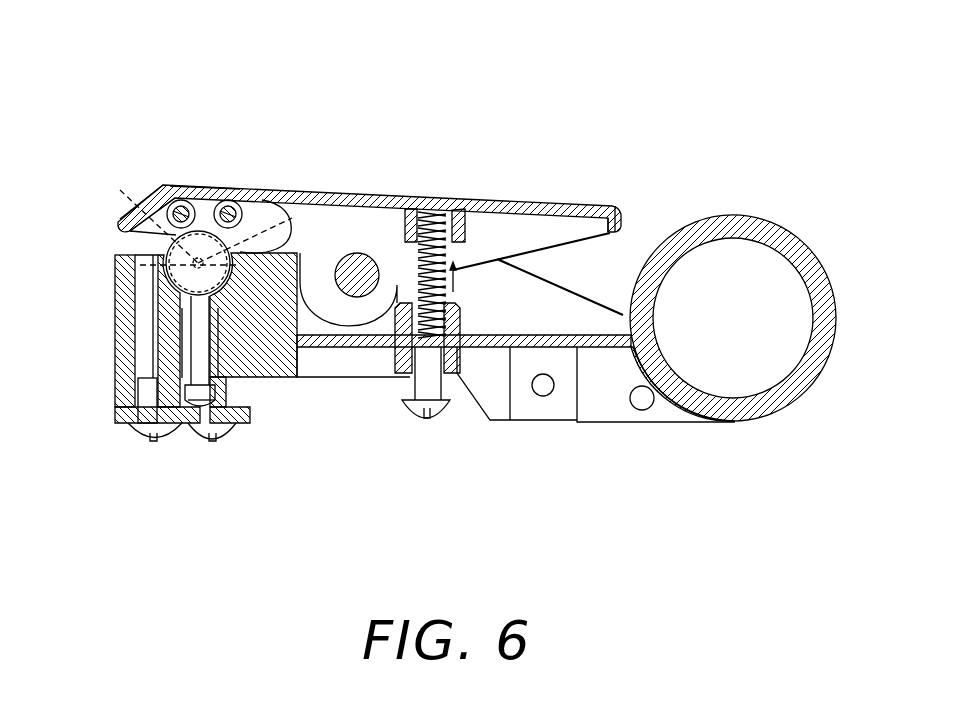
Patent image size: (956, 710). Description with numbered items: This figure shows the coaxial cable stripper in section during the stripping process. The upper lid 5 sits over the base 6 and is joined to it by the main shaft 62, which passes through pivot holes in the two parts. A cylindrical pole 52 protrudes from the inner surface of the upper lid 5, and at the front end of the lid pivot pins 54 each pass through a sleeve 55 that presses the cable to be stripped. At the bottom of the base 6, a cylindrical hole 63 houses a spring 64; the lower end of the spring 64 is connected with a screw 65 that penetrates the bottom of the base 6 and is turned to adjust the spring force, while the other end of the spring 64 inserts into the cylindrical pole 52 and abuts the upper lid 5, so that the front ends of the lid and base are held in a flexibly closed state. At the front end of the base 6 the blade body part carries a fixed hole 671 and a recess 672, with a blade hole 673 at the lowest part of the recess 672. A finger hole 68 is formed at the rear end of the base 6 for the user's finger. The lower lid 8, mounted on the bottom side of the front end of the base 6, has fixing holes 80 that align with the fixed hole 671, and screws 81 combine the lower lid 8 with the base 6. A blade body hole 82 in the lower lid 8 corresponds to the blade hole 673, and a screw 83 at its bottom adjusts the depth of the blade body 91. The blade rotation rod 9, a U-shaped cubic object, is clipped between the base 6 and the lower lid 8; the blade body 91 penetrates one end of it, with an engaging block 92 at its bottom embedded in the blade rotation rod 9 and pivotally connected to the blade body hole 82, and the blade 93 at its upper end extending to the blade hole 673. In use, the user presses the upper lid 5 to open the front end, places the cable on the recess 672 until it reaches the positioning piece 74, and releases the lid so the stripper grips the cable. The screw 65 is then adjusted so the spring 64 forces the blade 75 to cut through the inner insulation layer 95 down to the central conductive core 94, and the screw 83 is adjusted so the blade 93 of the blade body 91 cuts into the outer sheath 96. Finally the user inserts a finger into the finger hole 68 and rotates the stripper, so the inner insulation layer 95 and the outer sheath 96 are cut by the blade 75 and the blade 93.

The upper lid 5 is at (345, 146).
The base 6 is at (520, 448).
The lower lid 8 is at (127, 415).
The blade rotation rod 9 is at (178, 420).
The cylindrical pole 52 is at (472, 205).
The pivot pins 54 is at (203, 170).
The sleeve 55 is at (176, 200).
The main shaft 62 is at (363, 255).
The cylindrical hole 63 is at (453, 310).
The spring 64 is at (436, 208).
The screw 65 is at (444, 418).
The finger hole 68 is at (750, 380).
The positioning piece 74 is at (168, 248).
The blade 75 is at (140, 262).
The fixing holes 80 is at (120, 427).
The screws 81 is at (147, 393).
The blade body hole 82 is at (192, 425).
The screw 83 is at (212, 435).
The blade body 91 is at (203, 360).
The engaging block 92 is at (225, 413).
The blade 93 is at (125, 290).
The central conductive core 94 is at (262, 234).
The inner insulation layer 95 is at (147, 212).
The outer sheath 96 is at (157, 200).
The fixed hole 671 is at (145, 333).
The recess 672 is at (297, 253).
The blade hole 673 is at (188, 325).